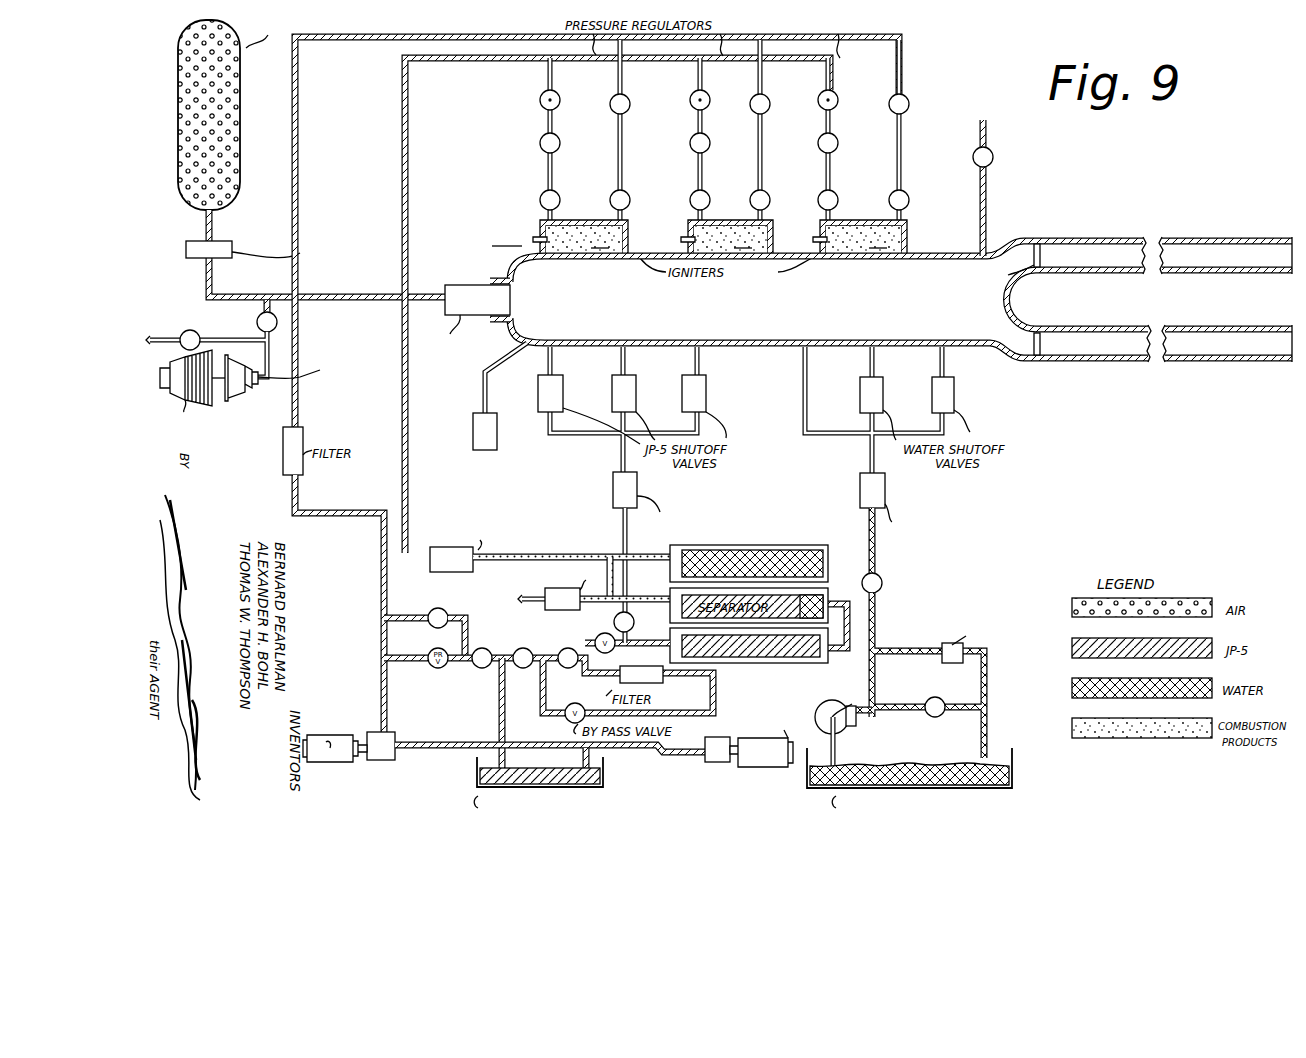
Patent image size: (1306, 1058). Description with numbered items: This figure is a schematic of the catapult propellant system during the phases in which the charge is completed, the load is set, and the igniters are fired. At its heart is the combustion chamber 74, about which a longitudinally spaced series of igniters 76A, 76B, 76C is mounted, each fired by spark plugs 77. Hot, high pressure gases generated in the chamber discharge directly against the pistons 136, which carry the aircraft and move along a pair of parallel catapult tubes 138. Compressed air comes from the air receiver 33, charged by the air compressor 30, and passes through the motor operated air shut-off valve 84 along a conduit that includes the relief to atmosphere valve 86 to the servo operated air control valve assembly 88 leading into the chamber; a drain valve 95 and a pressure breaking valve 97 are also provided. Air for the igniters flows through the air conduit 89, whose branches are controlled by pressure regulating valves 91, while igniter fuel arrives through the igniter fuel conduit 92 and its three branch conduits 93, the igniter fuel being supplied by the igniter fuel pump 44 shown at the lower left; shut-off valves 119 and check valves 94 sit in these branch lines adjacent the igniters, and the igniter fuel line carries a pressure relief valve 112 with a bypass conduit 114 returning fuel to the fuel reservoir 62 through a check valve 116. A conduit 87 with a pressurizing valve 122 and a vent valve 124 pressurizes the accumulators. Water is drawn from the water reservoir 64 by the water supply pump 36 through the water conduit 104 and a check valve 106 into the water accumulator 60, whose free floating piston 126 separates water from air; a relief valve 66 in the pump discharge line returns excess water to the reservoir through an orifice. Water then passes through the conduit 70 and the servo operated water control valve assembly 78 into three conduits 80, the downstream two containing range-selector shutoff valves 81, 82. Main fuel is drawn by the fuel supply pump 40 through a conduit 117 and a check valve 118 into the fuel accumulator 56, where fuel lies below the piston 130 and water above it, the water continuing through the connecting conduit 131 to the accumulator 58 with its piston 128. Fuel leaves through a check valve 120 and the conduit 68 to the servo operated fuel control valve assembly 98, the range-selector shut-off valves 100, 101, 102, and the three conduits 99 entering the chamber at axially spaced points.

The air receiver 33 is at (213, 125).
The air shut-off valve 84 is at (232, 246).
The igniter fuel conduit 92 is at (372, 42).
The air conduit 89 is at (478, 62).
The branch conduits 93 is at (617, 82).
The pressure regulating valves 91 is at (540, 100).
The shut-off valves 119 is at (614, 112).
The check valves 94 is at (611, 199).
The spark plugs 77 is at (538, 240).
The igniter 76A is at (584, 238).
The igniter 76B is at (730, 238).
The igniter 76C is at (863, 238).
The combustion chamber 74 is at (814, 327).
The catapult tubes 138 is at (1250, 326).
The pistons 136 is at (1041, 255).
The pressure breaking valve 97 is at (974, 168).
The air control valve assembly 88 is at (485, 308).
The conduit 87 is at (400, 333).
The combustion chamber drain valve 95 is at (494, 415).
The relief to atmosphere valve 86 is at (200, 330).
The air compressor 30 is at (248, 384).
The conduits 99 is at (612, 366).
The range-selector shut-off valve 100 is at (552, 393).
The range-selector shut-off valve 101 is at (626, 393).
The range-selector shut-off valve 102 is at (696, 393).
The fuel control valve assembly 98 is at (613, 494).
The conduit 68 is at (622, 535).
The conduits 80 is at (868, 368).
The water range-selector shutoff valve 81 is at (871, 395).
The water range-selector shutoff valve 82 is at (943, 395).
The water control valve assembly 78 is at (916, 502).
The conduit 70 is at (876, 548).
The check valve 106 is at (883, 579).
The water conduit 104 is at (880, 606).
The relief valve 66 is at (927, 702).
The water supply pump 36 is at (842, 730).
The water reservoir 64 is at (1013, 776).
The pressurizing valve 122 is at (467, 545).
The free floating piston 126 is at (670, 552).
The free floating piston 128 is at (670, 598).
The vent valve 124 is at (544, 591).
The water accumulator 60 is at (780, 545).
The accumulator 58 is at (832, 598).
The fuel accumulator 56 is at (762, 663).
The free floating piston 130 is at (814, 666).
The connecting conduit 131 is at (848, 648).
The pressure relief valve 112 is at (436, 610).
The bypass conduit 114 is at (468, 622).
The check valve 116 is at (490, 650).
The conduit 117 is at (530, 650).
The check valve 118 is at (596, 646).
The check valve 120 is at (616, 620).
The pump 44 is at (332, 762).
The fuel supply pump 40 is at (769, 761).
The fuel reservoir 62 is at (608, 768).